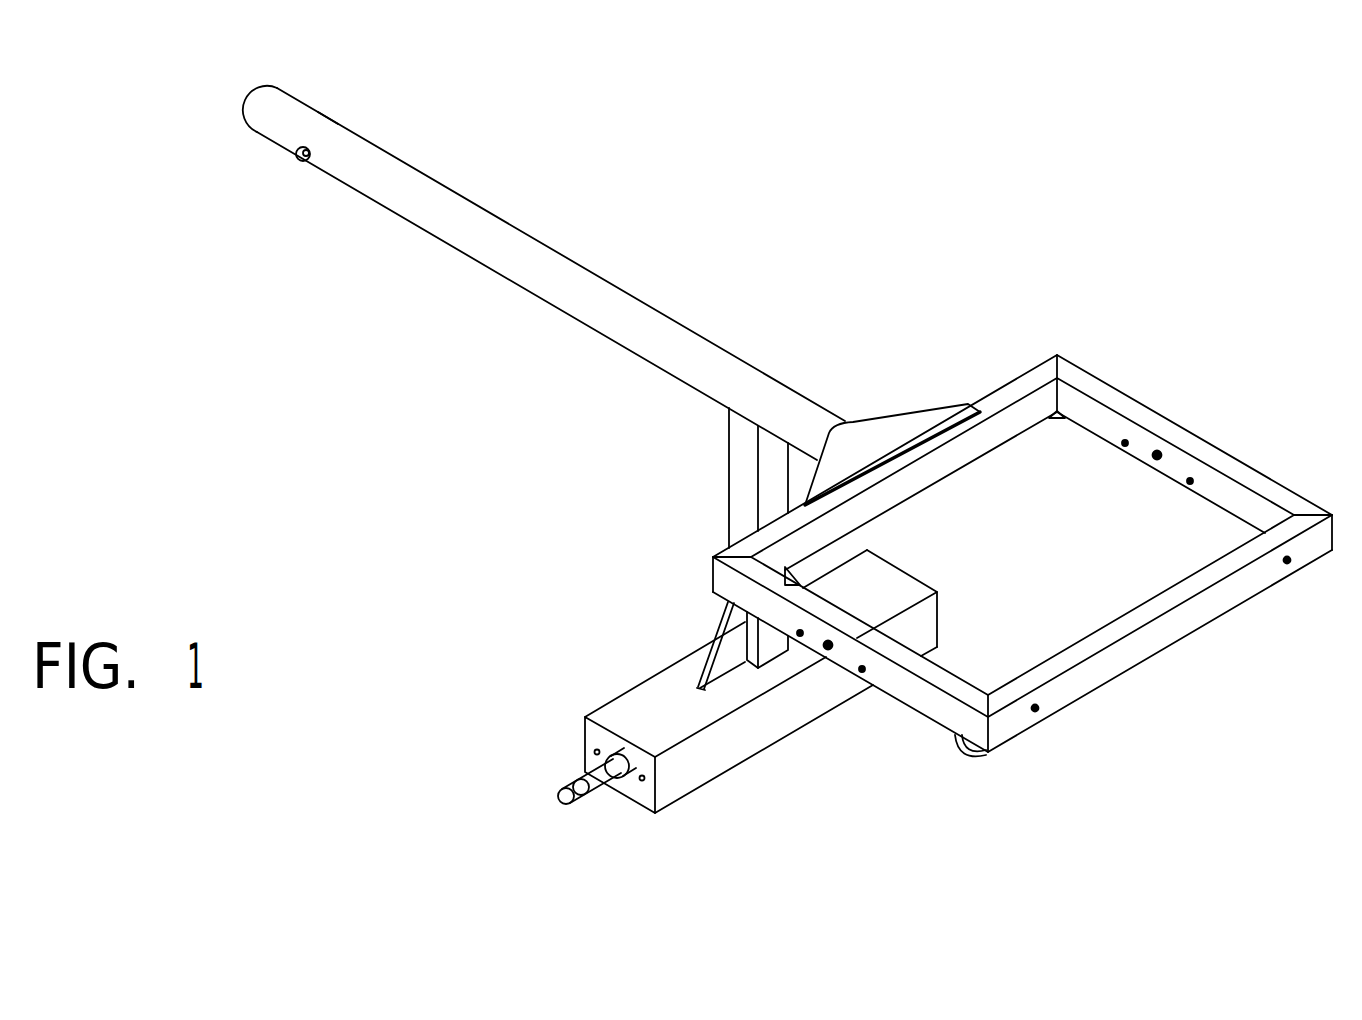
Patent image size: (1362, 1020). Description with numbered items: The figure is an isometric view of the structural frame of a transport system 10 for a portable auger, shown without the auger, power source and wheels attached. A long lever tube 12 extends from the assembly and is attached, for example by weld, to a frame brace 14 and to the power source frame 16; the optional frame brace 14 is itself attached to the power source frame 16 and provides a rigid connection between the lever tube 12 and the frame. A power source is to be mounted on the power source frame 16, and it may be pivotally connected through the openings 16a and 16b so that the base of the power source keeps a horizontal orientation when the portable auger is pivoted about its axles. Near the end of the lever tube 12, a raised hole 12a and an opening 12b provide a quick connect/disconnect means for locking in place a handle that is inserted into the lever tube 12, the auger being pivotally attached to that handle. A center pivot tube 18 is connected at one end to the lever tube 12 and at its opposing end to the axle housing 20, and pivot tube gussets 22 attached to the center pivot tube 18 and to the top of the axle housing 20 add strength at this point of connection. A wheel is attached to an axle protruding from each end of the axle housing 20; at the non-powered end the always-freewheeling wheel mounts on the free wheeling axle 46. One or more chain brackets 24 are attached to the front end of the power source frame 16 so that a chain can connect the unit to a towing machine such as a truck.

The transport system 10 is at (900, 155).
The lever tube 12 is at (489, 231).
The raised hole 12a is at (298, 158).
The opening 12b is at (334, 120).
The frame brace 14 is at (892, 437).
The power source frame 16 is at (1087, 380).
The opening 16a is at (830, 650).
The opening 16b is at (1155, 457).
The center pivot tube 18 is at (740, 498).
The axle housing 20 is at (640, 713).
The pivot tube gusset 22 is at (730, 644).
The chain bracket 24 is at (976, 755).
The free wheeling axle 46 is at (583, 800).